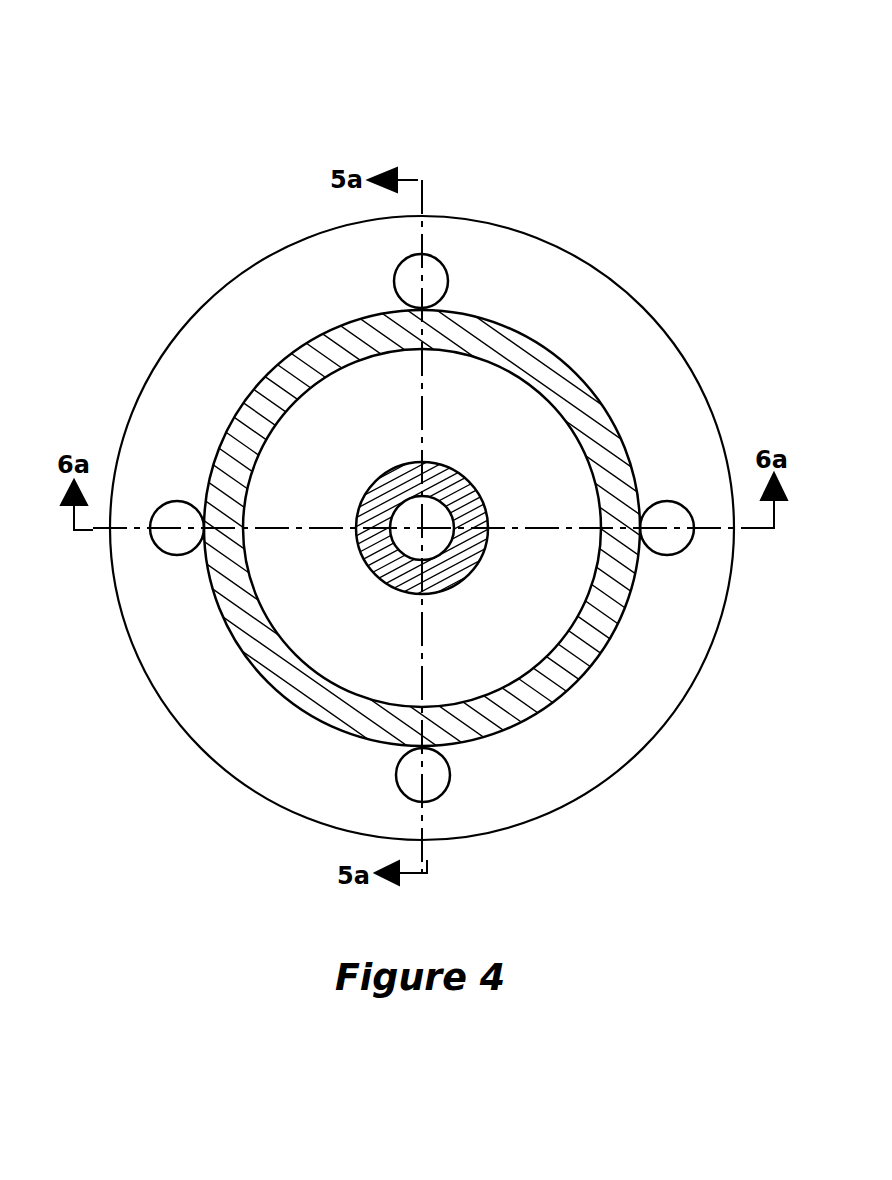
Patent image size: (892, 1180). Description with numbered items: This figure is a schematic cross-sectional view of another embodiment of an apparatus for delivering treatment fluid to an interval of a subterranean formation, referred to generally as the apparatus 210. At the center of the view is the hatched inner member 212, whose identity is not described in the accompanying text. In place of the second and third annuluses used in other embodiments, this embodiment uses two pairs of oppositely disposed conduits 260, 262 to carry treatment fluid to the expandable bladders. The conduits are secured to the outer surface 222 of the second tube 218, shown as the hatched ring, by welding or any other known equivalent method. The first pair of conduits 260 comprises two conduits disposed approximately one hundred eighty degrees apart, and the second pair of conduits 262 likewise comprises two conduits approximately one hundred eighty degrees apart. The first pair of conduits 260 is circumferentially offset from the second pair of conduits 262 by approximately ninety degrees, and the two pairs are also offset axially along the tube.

The apparatus for delivering treatment fluid 210 is at (746, 150).
The inner hub / pipe 212 is at (462, 560).
The second tube 218 is at (520, 357).
The outer surface of the second tube 222 is at (578, 375).
The first pair of oppositely disposed conduits 260 is at (438, 258).
The second pair of conduits 262 is at (167, 501).